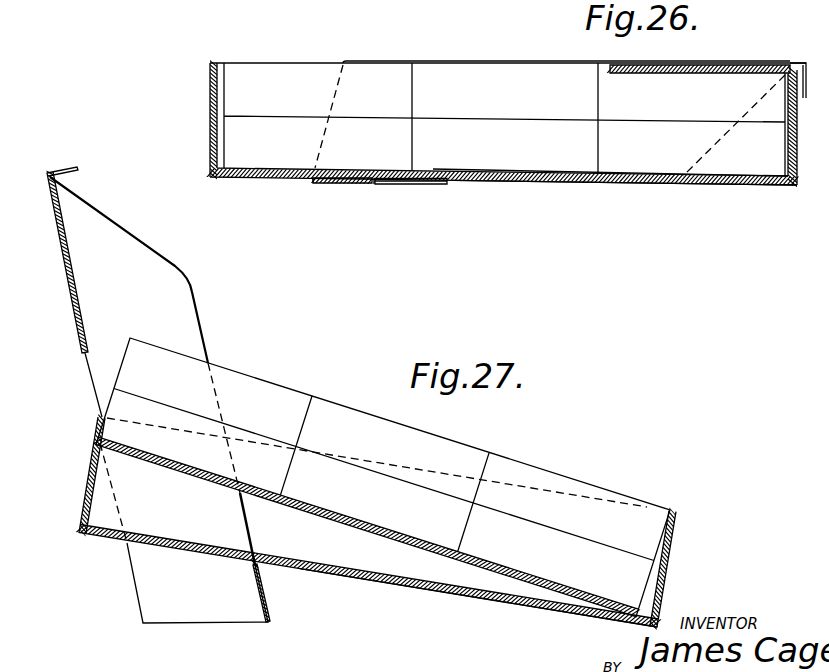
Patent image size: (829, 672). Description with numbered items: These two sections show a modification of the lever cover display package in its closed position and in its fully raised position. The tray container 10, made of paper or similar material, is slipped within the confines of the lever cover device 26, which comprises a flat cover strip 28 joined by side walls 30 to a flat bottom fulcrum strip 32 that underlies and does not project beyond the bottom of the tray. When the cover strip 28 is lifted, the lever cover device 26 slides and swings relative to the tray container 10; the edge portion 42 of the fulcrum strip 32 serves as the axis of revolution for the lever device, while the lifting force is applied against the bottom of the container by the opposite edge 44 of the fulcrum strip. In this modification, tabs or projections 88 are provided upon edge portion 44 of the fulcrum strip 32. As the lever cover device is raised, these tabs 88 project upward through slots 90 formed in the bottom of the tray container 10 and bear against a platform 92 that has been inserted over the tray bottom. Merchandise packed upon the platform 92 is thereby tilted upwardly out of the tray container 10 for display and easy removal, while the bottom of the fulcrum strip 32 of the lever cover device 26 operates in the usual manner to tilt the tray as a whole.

In FIG. 26, the tray container 10 is at (209, 124).
In FIG. 27, the tray container 10 is at (670, 560).
In FIG. 26, the lever cover device 26 is at (462, 60).
In FIG. 27, the lever cover device 26 is at (132, 578).
In FIG. 26, the cover strip 28 is at (752, 64).
In FIG. 27, the cover strip 28 is at (76, 300).
In FIG. 26, the side walls 30 is at (625, 158).
In FIG. 27, the side walls 30 is at (180, 312).
In FIG. 26, the fulcrum strip 32 is at (347, 183).
In FIG. 27, the fulcrum strip 32 is at (268, 601).
In FIG. 26, the edge portion 42 is at (318, 178).
In FIG. 26, the edge 44 is at (382, 183).
In FIG. 27, the edge 44 is at (257, 557).
In FIG. 26, the tabs or projections 88 is at (436, 185).
In FIG. 27, the tabs or projections 88 is at (240, 512).
In FIG. 26, the slots 90 is at (453, 184).
In FIG. 27, the slots 90 is at (320, 586).
In FIG. 26, the platform 92 is at (433, 169).